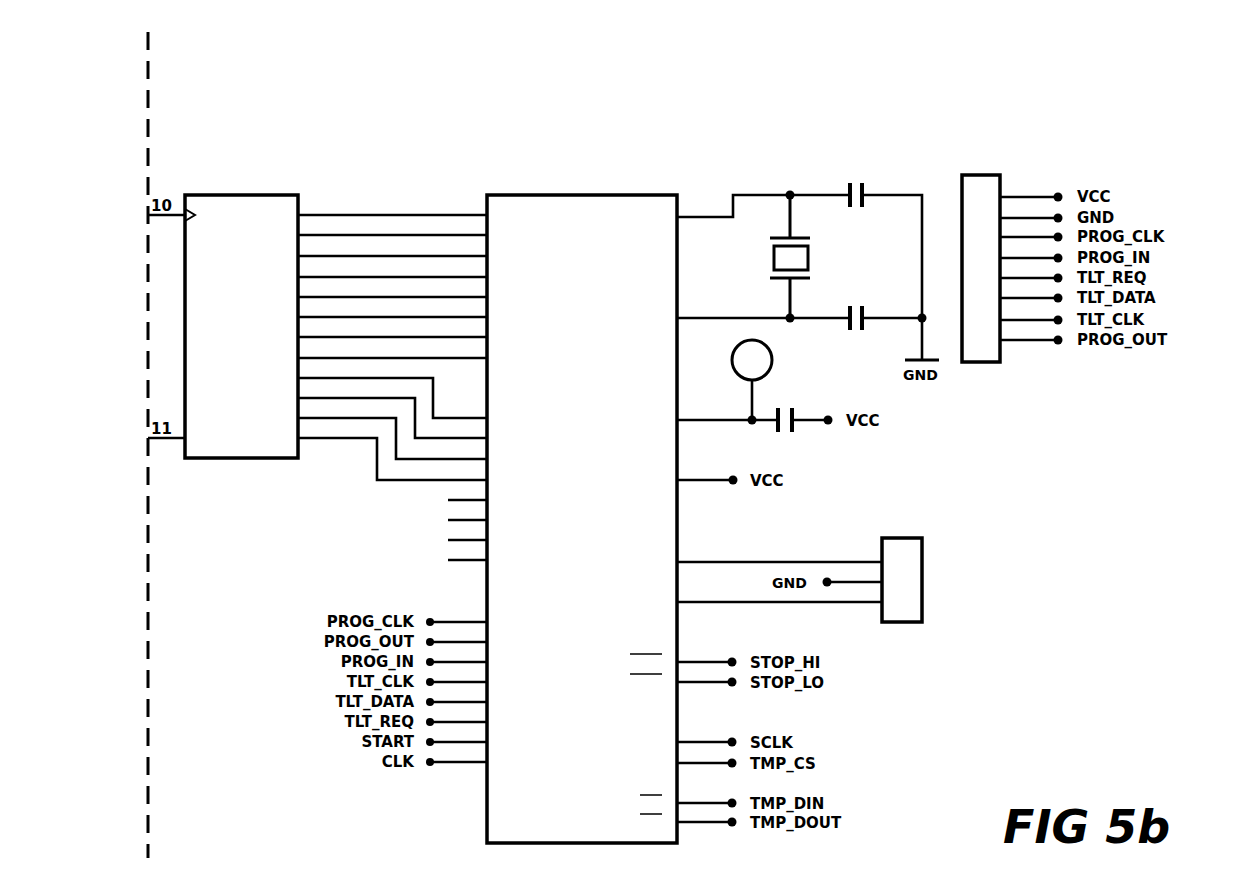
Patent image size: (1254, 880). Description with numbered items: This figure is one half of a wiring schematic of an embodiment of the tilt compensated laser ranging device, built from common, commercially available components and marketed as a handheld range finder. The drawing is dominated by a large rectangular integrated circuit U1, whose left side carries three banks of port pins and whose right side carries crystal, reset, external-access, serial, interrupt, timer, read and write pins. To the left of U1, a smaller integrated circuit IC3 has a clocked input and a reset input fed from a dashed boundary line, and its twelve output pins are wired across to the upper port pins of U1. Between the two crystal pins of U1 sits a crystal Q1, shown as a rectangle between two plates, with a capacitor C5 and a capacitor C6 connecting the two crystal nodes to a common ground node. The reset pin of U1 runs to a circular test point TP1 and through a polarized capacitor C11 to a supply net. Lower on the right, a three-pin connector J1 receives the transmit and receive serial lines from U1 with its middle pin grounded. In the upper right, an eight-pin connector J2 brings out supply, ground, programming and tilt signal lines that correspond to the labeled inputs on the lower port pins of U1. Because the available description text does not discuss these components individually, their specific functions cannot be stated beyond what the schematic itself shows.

The counter/divider IC IC3 is at (255, 315).
The microcontroller U1 is at (580, 501).
The crystal XTAL/S Q1 is at (805, 256).
The capacitor C5 is at (868, 192).
The capacitor C6 is at (868, 315).
The reset capacitor C11 is at (786, 412).
The test point TP1 is at (734, 380).
The connector J1 is at (890, 567).
The connector J2 is at (991, 254).